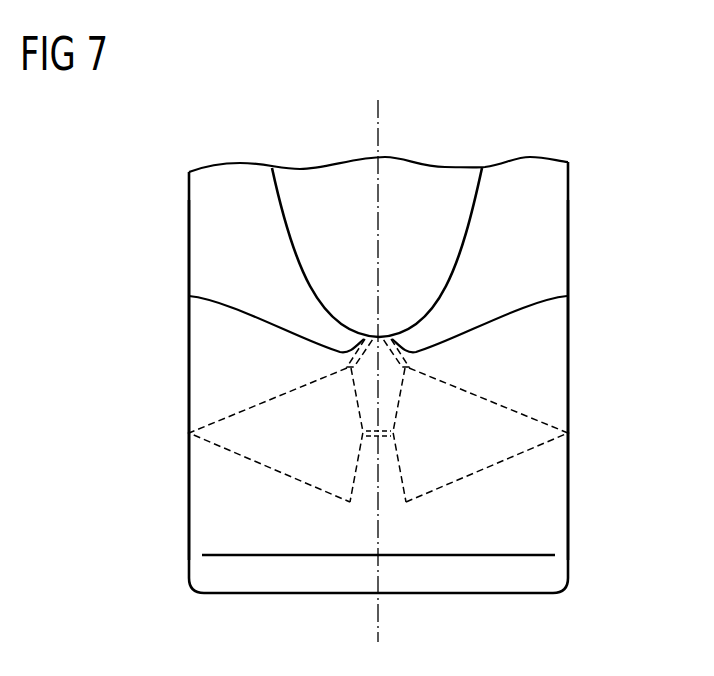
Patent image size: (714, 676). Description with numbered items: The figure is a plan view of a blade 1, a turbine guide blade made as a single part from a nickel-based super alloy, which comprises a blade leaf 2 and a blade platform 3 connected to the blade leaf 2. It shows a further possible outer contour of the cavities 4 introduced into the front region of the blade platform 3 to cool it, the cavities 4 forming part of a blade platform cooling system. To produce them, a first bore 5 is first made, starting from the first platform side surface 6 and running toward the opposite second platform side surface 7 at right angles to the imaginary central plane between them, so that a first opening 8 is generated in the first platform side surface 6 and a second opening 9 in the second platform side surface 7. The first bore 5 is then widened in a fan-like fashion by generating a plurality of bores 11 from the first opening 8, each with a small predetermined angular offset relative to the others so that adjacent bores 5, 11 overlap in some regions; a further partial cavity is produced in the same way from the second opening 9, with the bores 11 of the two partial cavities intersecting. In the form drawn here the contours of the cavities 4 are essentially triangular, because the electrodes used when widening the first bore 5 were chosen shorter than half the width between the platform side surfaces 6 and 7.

The blade 1 is at (592, 82).
The blade leaf 2 is at (440, 221).
The blade platform 3 is at (524, 256).
The cavity 4 is at (298, 470).
The first bore 5 is at (372, 438).
The first platform side surface 6 is at (189, 365).
The second platform side surface 7 is at (568, 360).
The first opening 8 is at (189, 437).
The second opening 9 is at (568, 437).
The bores 11 is at (189, 296).